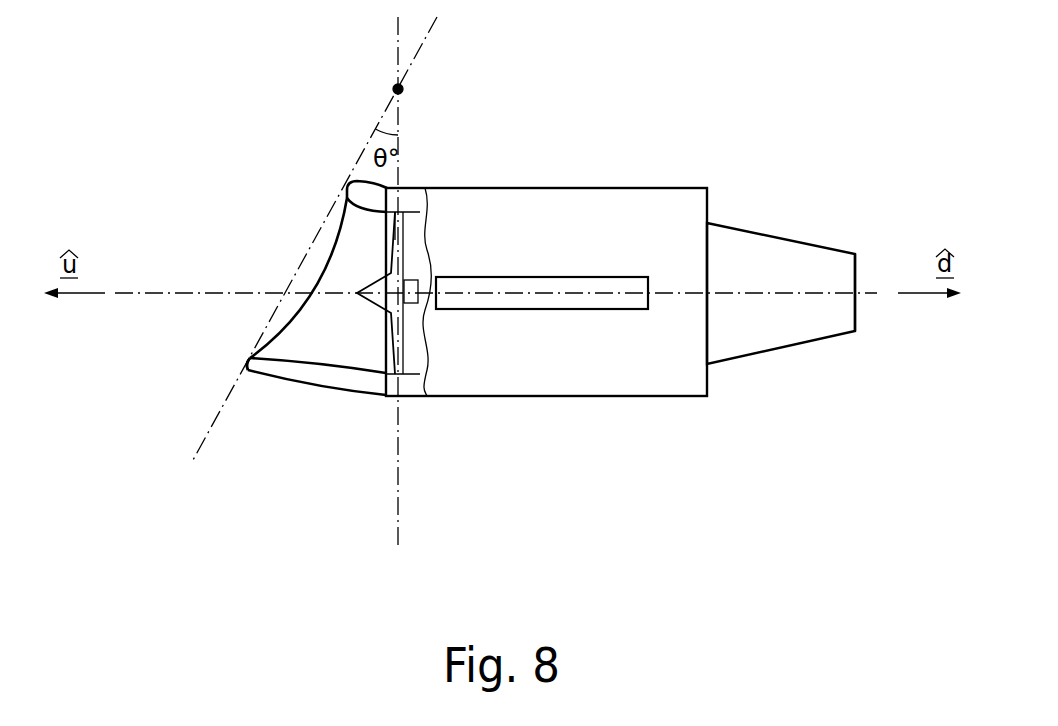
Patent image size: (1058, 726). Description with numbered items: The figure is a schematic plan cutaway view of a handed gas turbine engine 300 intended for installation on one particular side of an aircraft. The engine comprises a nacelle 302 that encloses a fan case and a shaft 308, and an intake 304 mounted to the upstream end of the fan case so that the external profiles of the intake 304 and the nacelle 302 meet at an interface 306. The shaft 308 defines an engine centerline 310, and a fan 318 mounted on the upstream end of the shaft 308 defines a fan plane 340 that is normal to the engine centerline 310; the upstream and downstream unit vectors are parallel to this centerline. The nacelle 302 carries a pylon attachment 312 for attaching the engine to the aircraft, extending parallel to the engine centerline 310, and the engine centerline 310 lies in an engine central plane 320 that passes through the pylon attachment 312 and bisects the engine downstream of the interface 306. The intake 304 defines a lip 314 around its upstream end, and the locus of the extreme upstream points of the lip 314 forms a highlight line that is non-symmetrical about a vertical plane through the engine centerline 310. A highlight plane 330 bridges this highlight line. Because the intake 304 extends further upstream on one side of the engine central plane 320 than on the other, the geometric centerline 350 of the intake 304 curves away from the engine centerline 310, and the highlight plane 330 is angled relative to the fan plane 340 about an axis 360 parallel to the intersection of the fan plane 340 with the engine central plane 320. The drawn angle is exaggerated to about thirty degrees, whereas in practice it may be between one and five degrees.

The handed gas turbine engine 300 is at (279, 132).
The nacelle 302 is at (672, 202).
The intake 304 is at (307, 388).
The interface 306 is at (383, 357).
The shaft 308 is at (410, 287).
The engine centerline 310 is at (777, 297).
The pylon attachment 312 is at (560, 277).
The lip 314 is at (248, 359).
The fan 318 is at (405, 223).
The engine central plane 320 is at (817, 297).
The highlight plane 330 is at (203, 438).
The fan plane 340 is at (400, 452).
The geometric centerline 350 is at (307, 278).
The axis 360 is at (403, 89).